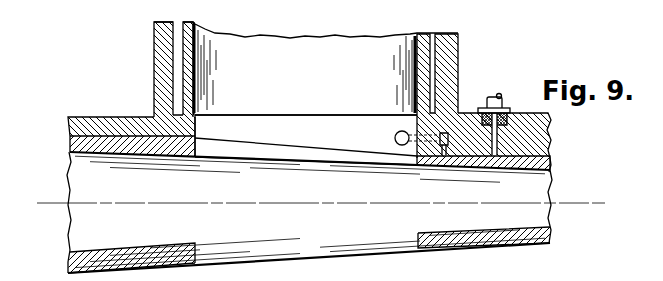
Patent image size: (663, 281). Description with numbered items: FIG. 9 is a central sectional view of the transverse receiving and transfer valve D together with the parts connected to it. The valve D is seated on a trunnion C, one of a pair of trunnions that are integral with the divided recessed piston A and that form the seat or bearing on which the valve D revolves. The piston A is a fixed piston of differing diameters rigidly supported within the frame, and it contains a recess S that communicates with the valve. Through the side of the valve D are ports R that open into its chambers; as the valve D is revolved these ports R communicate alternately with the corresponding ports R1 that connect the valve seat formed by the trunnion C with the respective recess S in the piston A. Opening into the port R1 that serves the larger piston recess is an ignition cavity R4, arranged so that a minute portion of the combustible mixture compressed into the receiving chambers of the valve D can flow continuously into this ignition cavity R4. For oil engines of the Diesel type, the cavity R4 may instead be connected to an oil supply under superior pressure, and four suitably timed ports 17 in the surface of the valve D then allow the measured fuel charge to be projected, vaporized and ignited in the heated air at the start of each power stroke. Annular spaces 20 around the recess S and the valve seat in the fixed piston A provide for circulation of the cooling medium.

The annular spaces 20 is at (165, 68).
The recessed piston A is at (460, 50).
The recess S is at (306, 68).
The trunnion C is at (110, 117).
The receiving and transfer valve D is at (552, 185).
The timed port 17 is at (457, 175).
The port R1 is at (343, 131).
The ignition cavity R4 is at (393, 160).
The port R is at (321, 212).